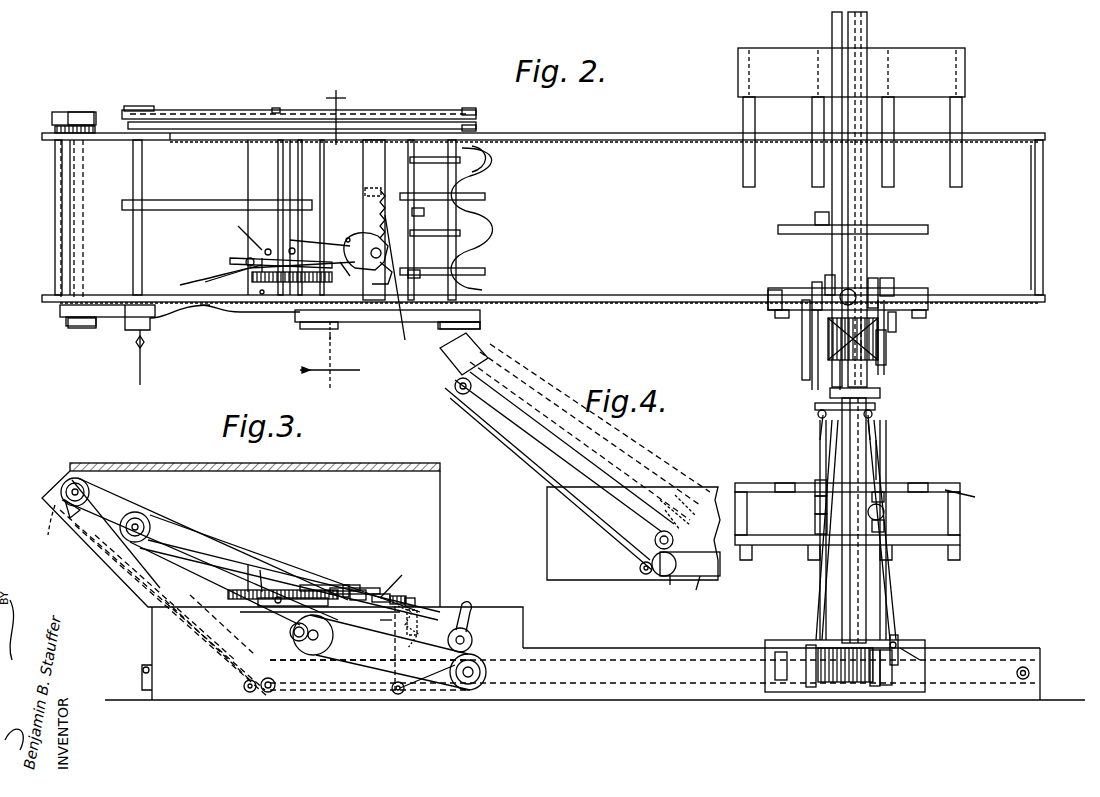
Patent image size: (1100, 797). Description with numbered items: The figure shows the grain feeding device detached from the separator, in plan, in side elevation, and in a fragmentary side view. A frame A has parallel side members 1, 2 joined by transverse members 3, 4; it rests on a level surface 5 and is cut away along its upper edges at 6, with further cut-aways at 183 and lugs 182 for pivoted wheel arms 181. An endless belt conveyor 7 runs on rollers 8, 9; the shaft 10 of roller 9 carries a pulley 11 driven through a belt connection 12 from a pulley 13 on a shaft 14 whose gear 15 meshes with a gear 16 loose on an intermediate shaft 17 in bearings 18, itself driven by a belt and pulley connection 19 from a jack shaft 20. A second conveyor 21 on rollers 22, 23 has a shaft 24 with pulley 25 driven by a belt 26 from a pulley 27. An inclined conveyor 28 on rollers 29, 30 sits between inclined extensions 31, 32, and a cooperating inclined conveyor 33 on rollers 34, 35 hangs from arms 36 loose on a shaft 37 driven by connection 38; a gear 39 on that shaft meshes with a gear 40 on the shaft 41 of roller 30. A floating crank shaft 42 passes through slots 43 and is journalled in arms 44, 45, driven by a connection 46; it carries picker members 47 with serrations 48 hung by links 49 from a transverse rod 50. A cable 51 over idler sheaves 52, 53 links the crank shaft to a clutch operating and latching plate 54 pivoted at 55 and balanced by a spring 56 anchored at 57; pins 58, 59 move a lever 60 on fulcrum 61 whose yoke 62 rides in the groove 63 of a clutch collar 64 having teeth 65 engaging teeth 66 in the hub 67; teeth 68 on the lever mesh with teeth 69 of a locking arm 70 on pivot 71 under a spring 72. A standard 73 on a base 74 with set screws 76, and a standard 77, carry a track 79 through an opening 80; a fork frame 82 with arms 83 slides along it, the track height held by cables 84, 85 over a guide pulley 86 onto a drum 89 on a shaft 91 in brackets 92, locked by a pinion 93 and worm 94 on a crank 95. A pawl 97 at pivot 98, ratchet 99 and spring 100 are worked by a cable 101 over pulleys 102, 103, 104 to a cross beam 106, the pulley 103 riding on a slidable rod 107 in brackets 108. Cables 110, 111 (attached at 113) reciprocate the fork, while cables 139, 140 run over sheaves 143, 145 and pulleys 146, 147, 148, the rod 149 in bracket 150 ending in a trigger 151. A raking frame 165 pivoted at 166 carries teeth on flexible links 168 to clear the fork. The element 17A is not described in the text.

In FIG. 2, the side member 1 is at (630, 296).
In FIG. 3, the side member 1 is at (690, 648).
In FIG. 2, the side member 2 is at (636, 134).
In FIG. 4, the side member 2 is at (690, 490).
In FIG. 2, the transverse member 3 is at (248, 167).
In FIG. 3, the transverse member 3 is at (245, 612).
In FIG. 2, the transverse member 4 is at (360, 188).
In FIG. 3, the transverse member 4 is at (391, 586).
In FIG. 3, the level surface 5 is at (1040, 700).
In FIG. 2, the cut-away upper edge 6 is at (525, 140).
In FIG. 3, the cut-away upper edge 6 is at (530, 650).
In FIG. 2, the endless belt conveyor 7 is at (708, 288).
In FIG. 3, the endless belt conveyor 7 is at (640, 660).
In FIG. 3, the roller 8 is at (1032, 670).
In FIG. 3, the roller 9 is at (480, 668).
In FIG. 2, the shaft 10 is at (452, 330).
In FIG. 3, the shaft 10 is at (482, 673).
In FIG. 2, the pulley 11 is at (480, 333).
In FIG. 2, the belt connection 12 is at (395, 322).
In FIG. 3, the belt connection 12 is at (358, 660).
In FIG. 2, the pulley 13 is at (321, 335).
In FIG. 3, the pulley 13 is at (304, 648).
In FIG. 2, the shaft 14 is at (306, 174).
In FIG. 3, the shaft 14 is at (390, 652).
In FIG. 2, the gear 15 is at (303, 277).
In FIG. 3, the gear 15 is at (320, 620).
In FIG. 2, the gear 16 is at (352, 118).
In FIG. 3, the gear 16 is at (340, 588).
In FIG. 2, the intermediate shaft 17 is at (258, 312).
In FIG. 3, the intermediate shaft 17 is at (310, 585).
In FIG. 2, the chain 17A is at (144, 344).
In FIG. 2, the bearings 18 is at (300, 140).
In FIG. 2, the belt and pulley connection 19 is at (208, 210).
In FIG. 3, the belt and pulley connection 19 is at (206, 550).
In FIG. 2, the jack shaft 20 is at (142, 265).
In FIG. 3, the jack shaft 20 is at (152, 524).
In FIG. 2, the second conveyor 21 is at (432, 138).
In FIG. 4, the second conveyor 21 is at (695, 588).
In FIG. 3, the second conveyor 21 is at (328, 700).
In FIG. 4, the roller 22 is at (660, 586).
In FIG. 3, the roller 22 is at (275, 700).
In FIG. 3, the roller 23 is at (445, 700).
In FIG. 2, the shaft 24 is at (276, 110).
In FIG. 3, the shaft 24 is at (264, 693).
In FIG. 2, the pulley 25 is at (290, 138).
In FIG. 4, the pulley 25 is at (678, 566).
In FIG. 2, the belt 26 is at (108, 112).
In FIG. 4, the belt 26 is at (480, 425).
In FIG. 2, the pulley 27 is at (74, 112).
In FIG. 2, the inclined conveyor 28 is at (55, 218).
In FIG. 4, the inclined conveyor 28 is at (590, 532).
In FIG. 3, the inclined conveyor 28 is at (172, 632).
In FIG. 4, the roller 29 is at (640, 568).
In FIG. 3, the roller 29 is at (240, 690).
In FIG. 2, the roller 30 is at (57, 269).
In FIG. 4, the roller 30 is at (450, 392).
In FIG. 2, the inclined extension 31 is at (100, 318).
In FIG. 3, the inclined extension 31 is at (125, 578).
In FIG. 2, the inclined extension 32 is at (107, 140).
In FIG. 4, the inclined conveyor 33 is at (638, 490).
In FIG. 3, the inclined conveyor 33 is at (218, 625).
In FIG. 2, the roller 34 is at (83, 250).
In FIG. 4, the roller 34 is at (470, 378).
In FIG. 4, the roller 35 is at (674, 540).
In FIG. 3, the roller 35 is at (291, 636).
In FIG. 4, the arms 36 is at (677, 510).
In FIG. 2, the shaft 37 is at (83, 275).
In FIG. 3, the shaft 37 is at (90, 482).
In FIG. 2, the belt and pulley connection 38 is at (118, 318).
In FIG. 3, the belt and pulley connection 38 is at (140, 508).
In FIG. 2, the gear 39 is at (84, 111).
In FIG. 3, the gear 39 is at (62, 485).
In FIG. 2, the gear 40 is at (55, 128).
In FIG. 3, the gear 40 is at (45, 524).
In FIG. 4, the shaft 41 is at (448, 360).
In FIG. 3, the shaft 41 is at (66, 520).
In FIG. 2, the floating crank shaft 42 is at (478, 145).
In FIG. 3, the floating crank shaft 42 is at (472, 638).
In FIG. 3, the vertically extending slots 43 is at (470, 620).
In FIG. 2, the arm 44 is at (365, 128).
In FIG. 2, the arm 45 is at (212, 306).
In FIG. 3, the arm 45 is at (288, 598).
In FIG. 2, the belt and pulley connection 46 is at (150, 108).
In FIG. 2, the picker members 47 is at (442, 220).
In FIG. 3, the picker members 47 is at (429, 643).
In FIG. 3, the serrations 48 is at (392, 686).
In FIG. 2, the link 49 is at (456, 218).
In FIG. 3, the link 49 is at (410, 620).
In FIG. 2, the transverse rod 50 is at (412, 212).
In FIG. 3, the transverse rod 50 is at (419, 600).
In FIG. 2, the cable 51 is at (416, 283).
In FIG. 3, the cable 51 is at (418, 738).
In FIG. 3, the idler sheave 52 is at (392, 700).
In FIG. 2, the idler sheave 53 is at (403, 278).
In FIG. 3, the idler sheave 53 is at (400, 596).
In FIG. 2, the clutch operating and latching plate 54 is at (377, 273).
In FIG. 3, the clutch operating and latching plate 54 is at (384, 594).
In FIG. 2, the pivot 55 is at (370, 292).
In FIG. 3, the pivot 55 is at (358, 627).
In FIG. 2, the spring 56 is at (376, 214).
In FIG. 2, the spring attachment 57 is at (368, 198).
In FIG. 2, the pin 58 is at (364, 253).
In FIG. 3, the pin 58 is at (361, 589).
In FIG. 2, the pin 59 is at (360, 238).
In FIG. 2, the lever 60 is at (348, 270).
In FIG. 3, the lever 60 is at (355, 579).
In FIG. 2, the fulcrum 61 is at (268, 249).
In FIG. 3, the fulcrum 61 is at (278, 596).
In FIG. 2, the yoke 62 is at (320, 239).
In FIG. 2, the peripheral groove 63 is at (283, 254).
In FIG. 2, the clutch collar 64 is at (287, 246).
In FIG. 2, the teeth 65 is at (256, 265).
In FIG. 2, the teeth 66 is at (257, 294).
In FIG. 2, the hub 67 is at (329, 286).
In FIG. 2, the teeth 68 is at (241, 231).
In FIG. 2, the teeth 69 is at (248, 266).
In FIG. 2, the locking arm 70 is at (230, 260).
In FIG. 3, the locking arm 70 is at (283, 588).
In FIG. 2, the pivot 71 is at (223, 283).
In FIG. 3, the pivot 71 is at (262, 574).
In FIG. 2, the spring 72 is at (211, 278).
In FIG. 3, the spring 72 is at (245, 572).
In FIG. 2, the standard 73 is at (878, 284).
In FIG. 2, the base 74 is at (989, 217).
In FIG. 2, the set screws 76 is at (780, 318).
In FIG. 3, the set screws 76 is at (780, 672).
In FIG. 3, the standard 77 is at (476, 690).
In FIG. 2, the track 79 is at (868, 36).
In FIG. 3, the track 79 is at (876, 478).
In FIG. 2, the vertical opening 80 is at (866, 288).
In FIG. 2, the fork frame 82 is at (906, 60).
In FIG. 3, the fork frame 82 is at (935, 485).
In FIG. 2, the fork arms 83 is at (743, 110).
In FIG. 3, the fork arms 83 is at (752, 553).
In FIG. 2, the cable 84 is at (832, 36).
In FIG. 3, the cable 84 is at (822, 418).
In FIG. 2, the cable 85 is at (852, 375).
In FIG. 3, the cable 85 is at (870, 422).
In FIG. 2, the guide pulley 86 is at (848, 299).
In FIG. 2, the drum 89 is at (853, 346).
In FIG. 3, the drum 89 is at (840, 640).
In FIG. 2, the shaft 91 is at (796, 340).
In FIG. 3, the shaft 91 is at (798, 722).
In FIG. 3, the brackets 92 is at (808, 648).
In FIG. 3, the pinion 93 is at (875, 688).
In FIG. 2, the worm 94 is at (888, 345).
In FIG. 3, the crank 95 is at (855, 684).
In FIG. 2, the pawl 97 is at (900, 324).
In FIG. 3, the pawl 97 is at (896, 635).
In FIG. 3, the pivot 98 is at (900, 645).
In FIG. 3, the ratchet 99 is at (892, 612).
In FIG. 3, the spring 100 is at (905, 648).
In FIG. 3, the cable 101 is at (876, 406).
In FIG. 3, the guide pulley 102 is at (891, 527).
In FIG. 2, the intermediate guide pulley 103 is at (906, 280).
In FIG. 3, the intermediate guide pulley 103 is at (890, 512).
In FIG. 2, the guide pulley 104 is at (894, 288).
In FIG. 3, the guide pulley 104 is at (891, 496).
In FIG. 2, the cross beam 106 is at (826, 282).
In FIG. 2, the slidable rod 107 is at (884, 166).
In FIG. 3, the slidable rod 107 is at (930, 515).
In FIG. 2, the guiding and retaining brackets 108 is at (868, 244).
In FIG. 2, the cable 110 is at (832, 72).
In FIG. 3, the cable 110 is at (829, 467).
In FIG. 2, the cable 111 is at (868, 100).
In FIG. 2, the cable connection 113 is at (870, 74).
In FIG. 2, the cable 139 is at (935, 368).
In FIG. 3, the cable 139 is at (876, 462).
In FIG. 2, the cable 140 is at (816, 382).
In FIG. 3, the cable 140 is at (818, 438).
In FIG. 3, the guide sheave 143 is at (886, 580).
In FIG. 3, the guide sheave 145 is at (814, 620).
In FIG. 2, the lower pulley 146 is at (876, 207).
In FIG. 3, the lower pulley 146 is at (815, 522).
In FIG. 2, the intermediate pulley 147 is at (806, 295).
In FIG. 3, the intermediate pulley 147 is at (815, 502).
In FIG. 2, the upper pulley 148 is at (780, 300).
In FIG. 3, the upper pulley 148 is at (815, 482).
In FIG. 2, the slidable rod 149 is at (832, 255).
In FIG. 2, the bracket 150 is at (836, 242).
In FIG. 2, the trigger 151 is at (807, 212).
In FIG. 2, the raking member frame 165 is at (905, 226).
In FIG. 3, the raking member frame 165 is at (775, 486).
In FIG. 4, the pivot 166 is at (720, 509).
In FIG. 3, the flexible links 168 is at (971, 497).
In FIG. 3, the arms 181 is at (152, 678).
In FIG. 3, the lugs 182 is at (152, 660).
In FIG. 3, the cut-away portion 183 is at (152, 690).
In FIG. 2, the frame A is at (592, 305).
In FIG. 4, the frame A is at (546, 543).
In FIG. 3, the frame A is at (626, 706).